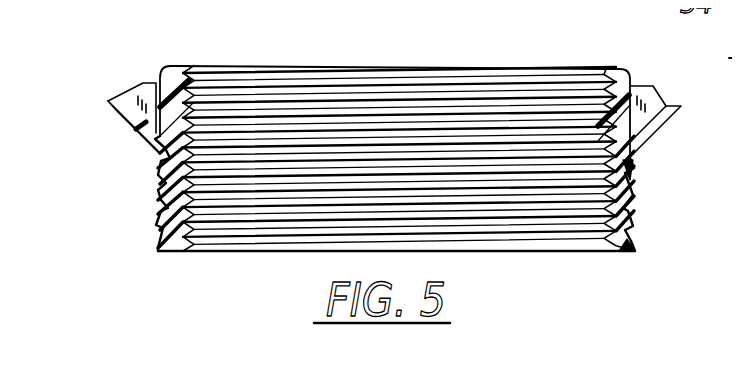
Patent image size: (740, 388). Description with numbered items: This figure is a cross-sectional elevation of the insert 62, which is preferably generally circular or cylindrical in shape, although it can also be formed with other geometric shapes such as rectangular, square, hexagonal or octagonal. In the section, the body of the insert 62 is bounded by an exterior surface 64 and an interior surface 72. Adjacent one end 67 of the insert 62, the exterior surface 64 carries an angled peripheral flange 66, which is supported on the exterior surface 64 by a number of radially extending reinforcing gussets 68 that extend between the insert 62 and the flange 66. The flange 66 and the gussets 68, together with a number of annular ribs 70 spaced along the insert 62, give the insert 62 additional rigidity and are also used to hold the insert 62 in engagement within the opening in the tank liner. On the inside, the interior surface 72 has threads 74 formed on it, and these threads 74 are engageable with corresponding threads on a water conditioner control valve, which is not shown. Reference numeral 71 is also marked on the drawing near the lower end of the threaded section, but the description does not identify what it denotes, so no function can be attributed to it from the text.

The insert 62 is at (128, 181).
The exterior surface 64 is at (145, 197).
The angled peripheral flange 66 is at (110, 106).
The end 67 is at (164, 57).
The reinforcing gussets 68 is at (127, 82).
The annular ribs 70 is at (148, 222).
The bottom end corner 71 is at (606, 250).
The interior surface 72 is at (186, 125).
The threads 74 is at (192, 160).